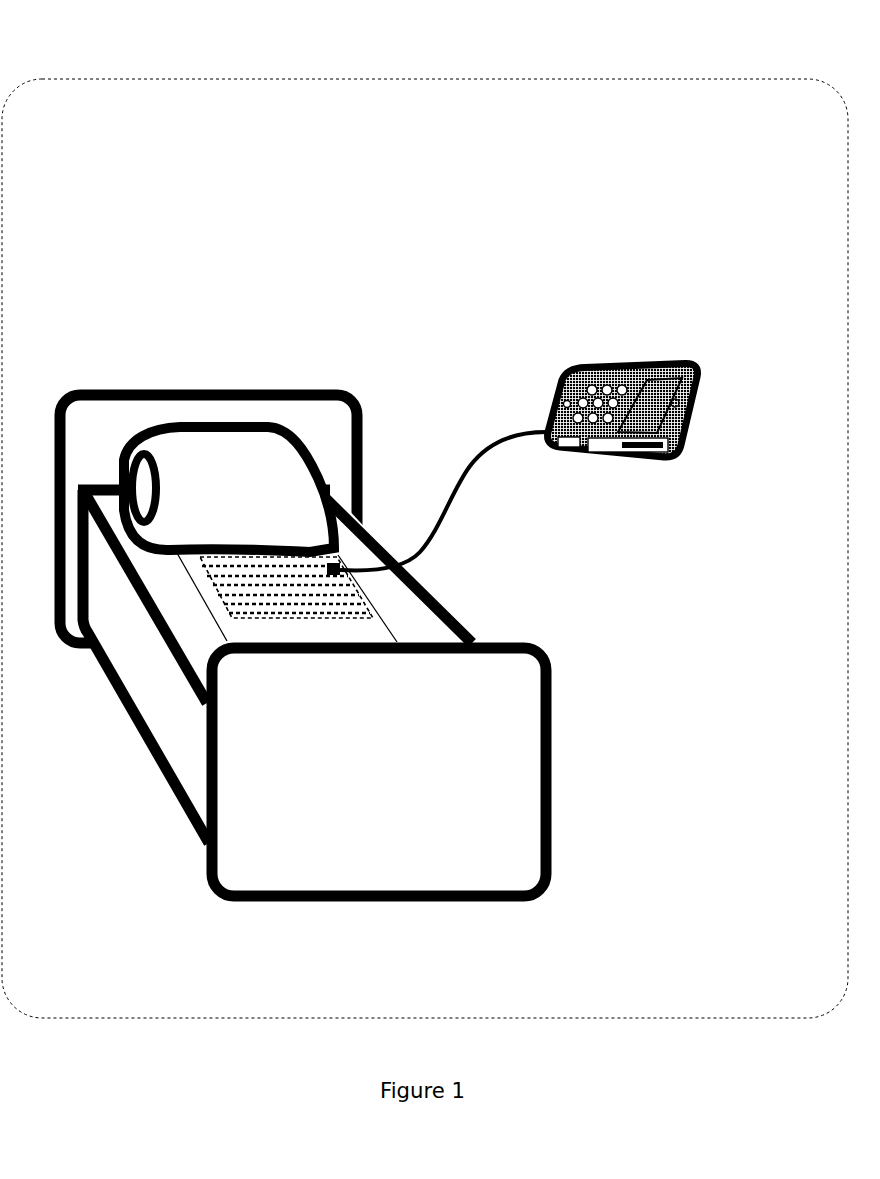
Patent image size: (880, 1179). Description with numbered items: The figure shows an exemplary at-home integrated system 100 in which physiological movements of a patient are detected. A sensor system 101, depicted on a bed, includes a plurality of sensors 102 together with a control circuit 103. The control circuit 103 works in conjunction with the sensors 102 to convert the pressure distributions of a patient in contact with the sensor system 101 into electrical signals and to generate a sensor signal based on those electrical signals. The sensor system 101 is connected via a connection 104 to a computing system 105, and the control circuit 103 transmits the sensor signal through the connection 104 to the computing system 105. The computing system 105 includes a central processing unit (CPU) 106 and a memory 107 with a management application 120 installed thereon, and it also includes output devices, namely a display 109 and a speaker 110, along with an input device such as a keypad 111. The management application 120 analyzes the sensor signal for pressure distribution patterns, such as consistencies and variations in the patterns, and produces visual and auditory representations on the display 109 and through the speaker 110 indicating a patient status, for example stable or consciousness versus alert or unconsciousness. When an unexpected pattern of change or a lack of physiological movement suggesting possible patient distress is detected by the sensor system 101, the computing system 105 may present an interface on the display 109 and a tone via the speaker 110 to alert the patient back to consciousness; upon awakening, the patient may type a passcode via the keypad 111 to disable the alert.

The system 100 is at (45, 79).
The sensor system 101 is at (408, 611).
The sensors 102 is at (312, 632).
The control circuit 103 is at (342, 569).
The connection 104 is at (497, 425).
The computing system 105 is at (621, 364).
The central processing unit (CPU) 106 is at (550, 455).
The memory 107 is at (617, 467).
The display 109 is at (653, 403).
The speaker 110 is at (680, 403).
The keypad 111 is at (578, 378).
The management application 120 is at (708, 477).